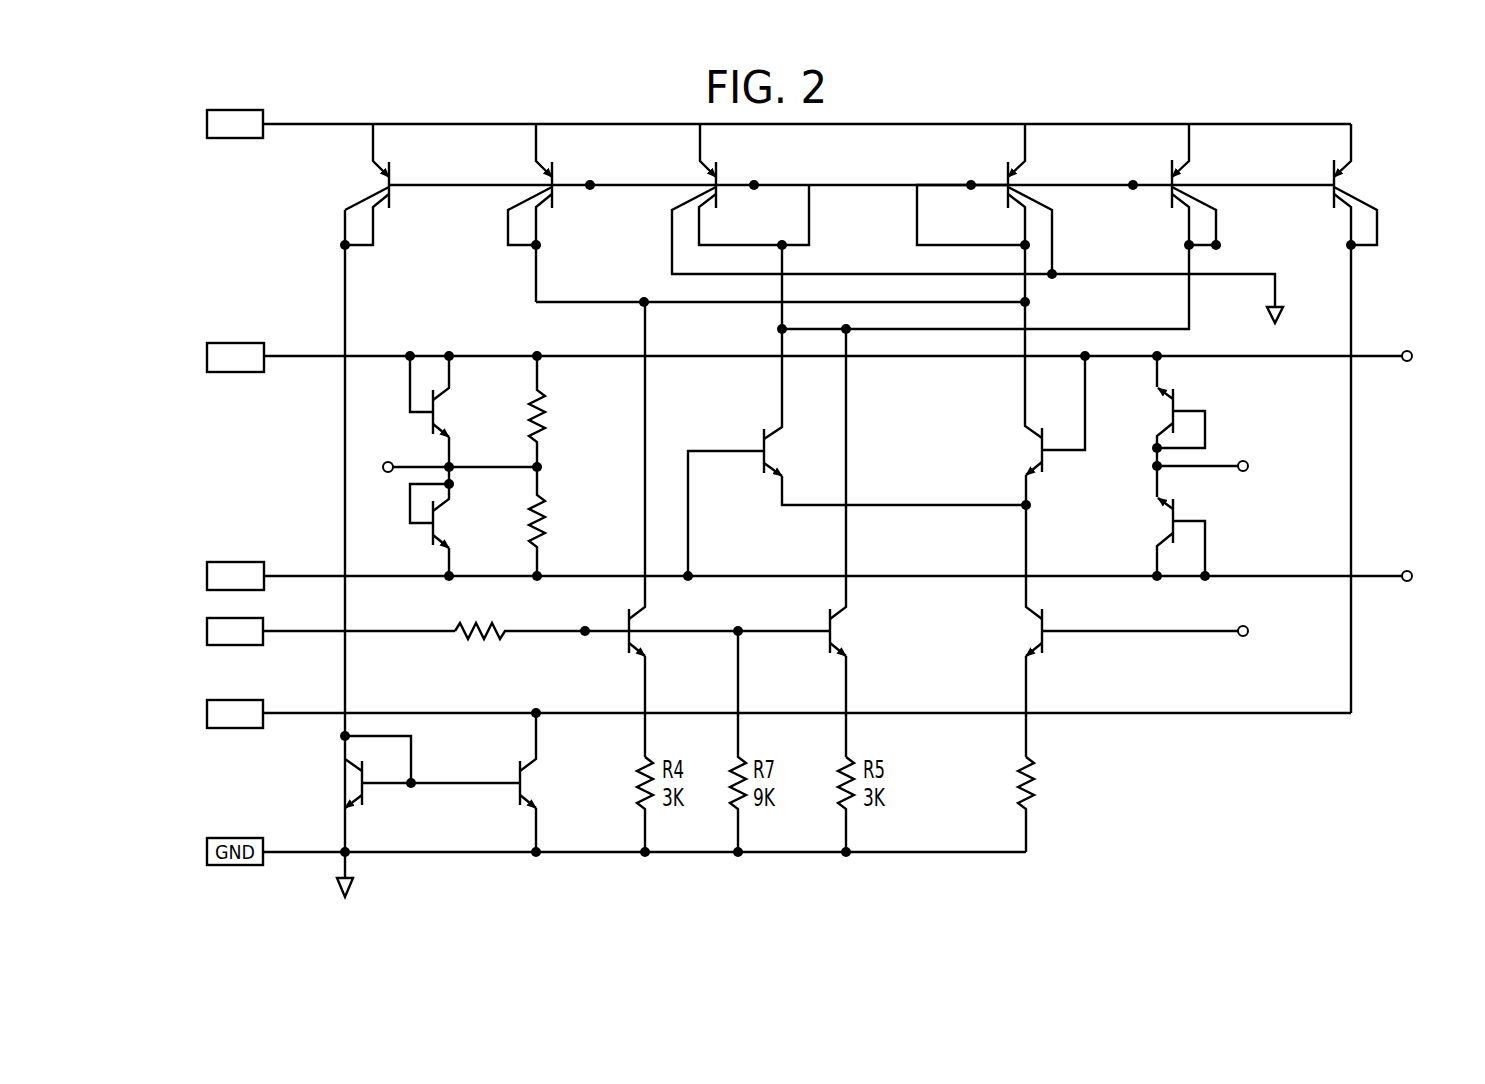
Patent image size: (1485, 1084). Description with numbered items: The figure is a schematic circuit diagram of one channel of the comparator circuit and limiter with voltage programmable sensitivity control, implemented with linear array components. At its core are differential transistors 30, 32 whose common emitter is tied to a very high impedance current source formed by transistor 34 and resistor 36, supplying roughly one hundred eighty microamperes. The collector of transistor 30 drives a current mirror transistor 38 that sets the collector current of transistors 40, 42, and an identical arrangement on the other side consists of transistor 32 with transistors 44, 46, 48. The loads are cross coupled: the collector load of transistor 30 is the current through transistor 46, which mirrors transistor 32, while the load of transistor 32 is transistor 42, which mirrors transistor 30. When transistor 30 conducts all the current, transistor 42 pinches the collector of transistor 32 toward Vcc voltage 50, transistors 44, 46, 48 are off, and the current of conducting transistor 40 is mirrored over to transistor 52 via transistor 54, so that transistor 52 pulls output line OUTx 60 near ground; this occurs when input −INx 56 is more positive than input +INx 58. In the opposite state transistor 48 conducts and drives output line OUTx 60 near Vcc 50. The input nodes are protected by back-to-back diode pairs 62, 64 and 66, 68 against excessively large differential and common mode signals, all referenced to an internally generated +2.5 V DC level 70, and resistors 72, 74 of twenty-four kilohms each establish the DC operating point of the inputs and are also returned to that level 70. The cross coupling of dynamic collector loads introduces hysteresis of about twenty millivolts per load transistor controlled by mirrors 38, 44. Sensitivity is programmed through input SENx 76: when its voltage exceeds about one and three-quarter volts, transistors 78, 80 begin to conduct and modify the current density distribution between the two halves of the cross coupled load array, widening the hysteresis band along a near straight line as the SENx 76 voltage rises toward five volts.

The Vcc voltage 50 is at (228, 110).
The transistor 40 is at (382, 184).
The transistor 42 is at (545, 184).
The current mirror transistor 38 is at (710, 184).
The transistor 44 is at (1016, 184).
The transistor 46 is at (1178, 184).
The transistor 48 is at (1340, 184).
The input +INx 58 is at (228, 344).
The input −INx 56 is at (228, 563).
The input SENx 76 is at (208, 618).
The output line OUTx 60 is at (228, 700).
The back-to-back diode pair 62 is at (436, 397).
The back-to-back diode pair 64 is at (430, 536).
The resistor 72 is at (530, 397).
The resistor 74 is at (540, 496).
The +2.5 V DC level 70 is at (384, 472).
The differential transistor 30 is at (762, 458).
The differential transistor 32 is at (1045, 458).
The transistor 34 is at (1045, 648).
The transistor 78 is at (627, 645).
The transistor 80 is at (828, 646).
The transistor 52 is at (516, 775).
The transistor 54 is at (363, 790).
The resistor 36 is at (1028, 762).
The back-to-back diode pair 66 is at (1170, 416).
The back-to-back diode pair 68 is at (1170, 523).